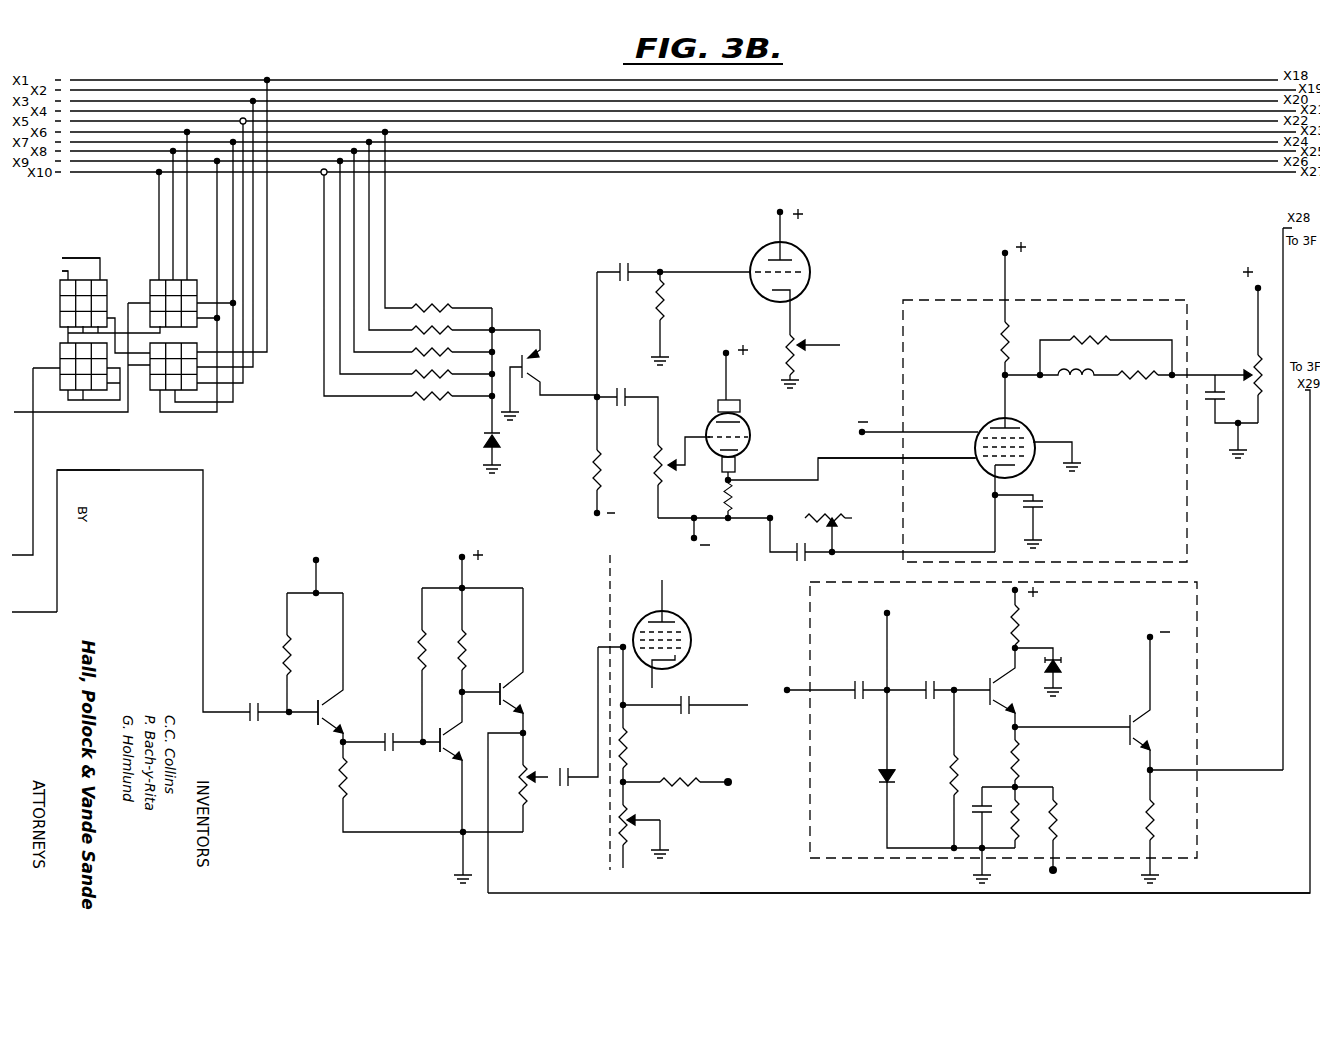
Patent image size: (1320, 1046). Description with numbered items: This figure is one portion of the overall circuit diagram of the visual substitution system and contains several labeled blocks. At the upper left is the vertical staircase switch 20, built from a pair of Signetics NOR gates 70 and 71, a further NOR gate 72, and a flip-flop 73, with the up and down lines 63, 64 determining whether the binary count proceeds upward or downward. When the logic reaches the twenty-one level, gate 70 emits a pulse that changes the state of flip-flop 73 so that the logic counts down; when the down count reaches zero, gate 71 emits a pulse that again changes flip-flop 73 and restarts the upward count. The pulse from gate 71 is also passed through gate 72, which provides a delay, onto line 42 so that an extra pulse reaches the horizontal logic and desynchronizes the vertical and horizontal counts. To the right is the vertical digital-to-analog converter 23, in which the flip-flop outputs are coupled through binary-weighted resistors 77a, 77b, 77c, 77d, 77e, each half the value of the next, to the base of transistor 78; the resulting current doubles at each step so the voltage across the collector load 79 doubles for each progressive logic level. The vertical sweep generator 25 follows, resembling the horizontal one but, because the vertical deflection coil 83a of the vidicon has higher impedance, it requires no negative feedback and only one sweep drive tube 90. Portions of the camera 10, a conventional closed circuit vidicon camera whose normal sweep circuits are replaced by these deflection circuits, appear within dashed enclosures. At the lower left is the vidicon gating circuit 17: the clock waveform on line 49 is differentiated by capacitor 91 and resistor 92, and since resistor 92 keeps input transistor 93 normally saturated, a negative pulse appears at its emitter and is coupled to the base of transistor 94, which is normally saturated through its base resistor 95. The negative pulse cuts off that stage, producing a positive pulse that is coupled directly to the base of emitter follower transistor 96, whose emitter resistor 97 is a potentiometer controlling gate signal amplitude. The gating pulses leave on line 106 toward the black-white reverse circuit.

The camera 10 is at (1170, 548).
The vidicon gating circuit 17 is at (518, 532).
The vertical staircase switch 20 is at (189, 417).
The vertical digital-to-analog converter 23 is at (482, 262).
The vertical sweep generator 25 is at (985, 233).
The line 42 is at (37, 476).
The line 49 is at (57, 492).
The up line 63 is at (62, 270).
The down line 64 is at (65, 257).
The NOR gate 70 is at (197, 380).
The NOR gate 71 is at (197, 280).
The NOR gate 72 is at (60, 353).
The flip-flop 73 is at (60, 307).
The resistor 77a is at (412, 402).
The resistor 77b is at (400, 379).
The resistor 77c is at (404, 356).
The resistor 77d is at (410, 334).
The resistor 77e is at (414, 312).
The transistor 78 is at (534, 361).
The collector load 79 is at (592, 466).
The vertical deflection coil 83a is at (1074, 373).
The sweep drive tube 90 is at (1040, 440).
The capacitor 91 is at (248, 725).
The resistor 92 is at (283, 650).
The input transistor 93 is at (345, 698).
The transistor 94 is at (437, 752).
The base resistor 95 is at (418, 650).
The emitter follower transistor 96 is at (513, 690).
The emitter resistor 97 is at (528, 765).
The line 106 is at (1198, 893).